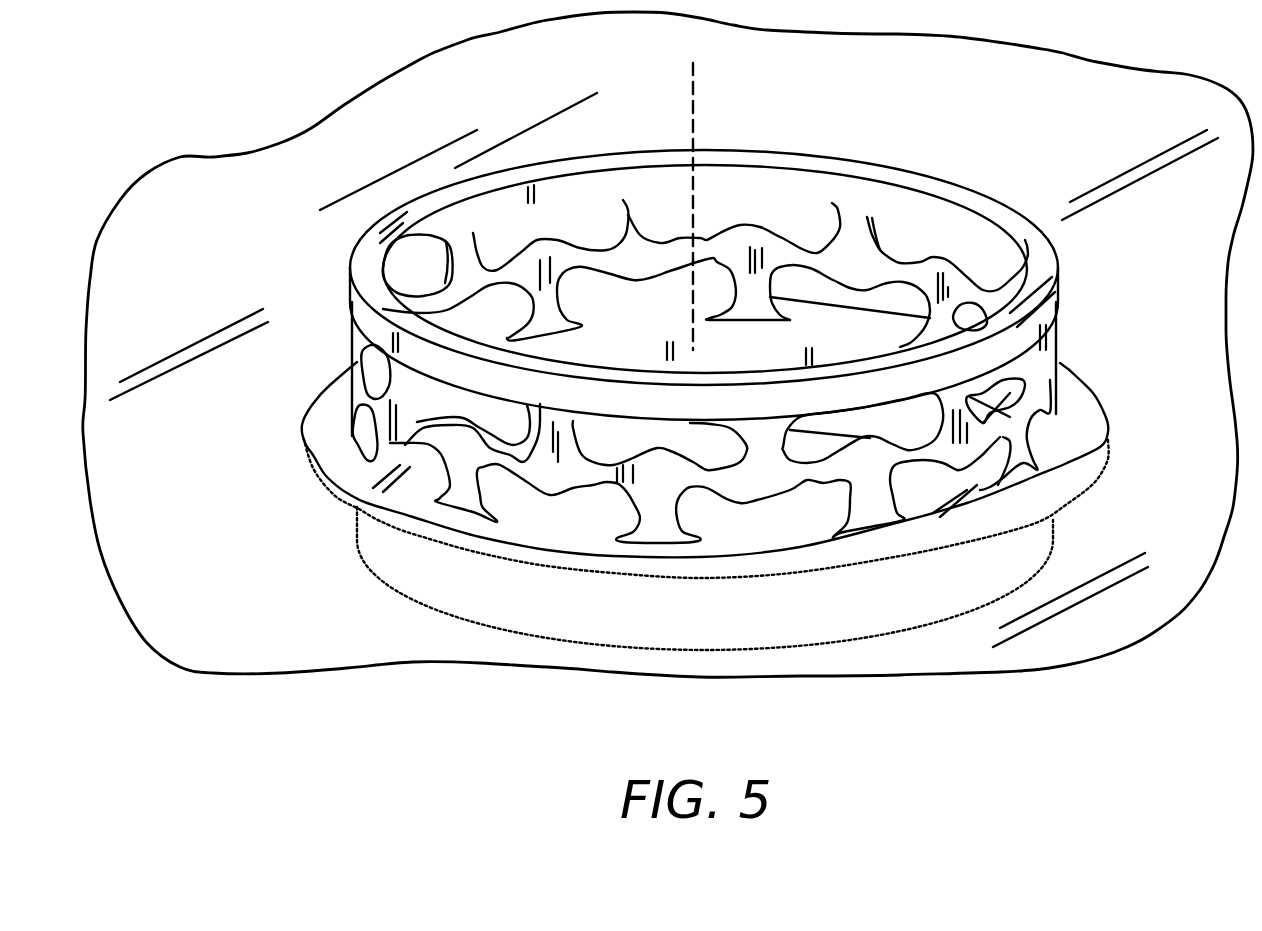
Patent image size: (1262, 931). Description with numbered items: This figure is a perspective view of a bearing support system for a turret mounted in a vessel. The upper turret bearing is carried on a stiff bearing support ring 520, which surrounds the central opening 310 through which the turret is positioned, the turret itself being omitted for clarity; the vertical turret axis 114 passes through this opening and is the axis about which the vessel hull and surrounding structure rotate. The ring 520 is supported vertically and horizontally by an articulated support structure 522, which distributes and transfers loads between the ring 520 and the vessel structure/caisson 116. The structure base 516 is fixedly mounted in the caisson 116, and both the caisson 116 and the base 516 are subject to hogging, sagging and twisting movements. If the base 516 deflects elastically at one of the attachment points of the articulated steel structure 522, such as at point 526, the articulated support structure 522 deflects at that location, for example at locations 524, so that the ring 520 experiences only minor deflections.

The vertical turret axis 114 is at (692, 113).
The vessel structure/caisson 116 is at (1148, 308).
The central opening 310 is at (753, 363).
The structure base 516 is at (1085, 455).
The stiff bearing support ring 520 is at (641, 195).
The articulated support structure 522 is at (361, 398).
The locations 524 is at (810, 250).
The point 526 is at (757, 320).